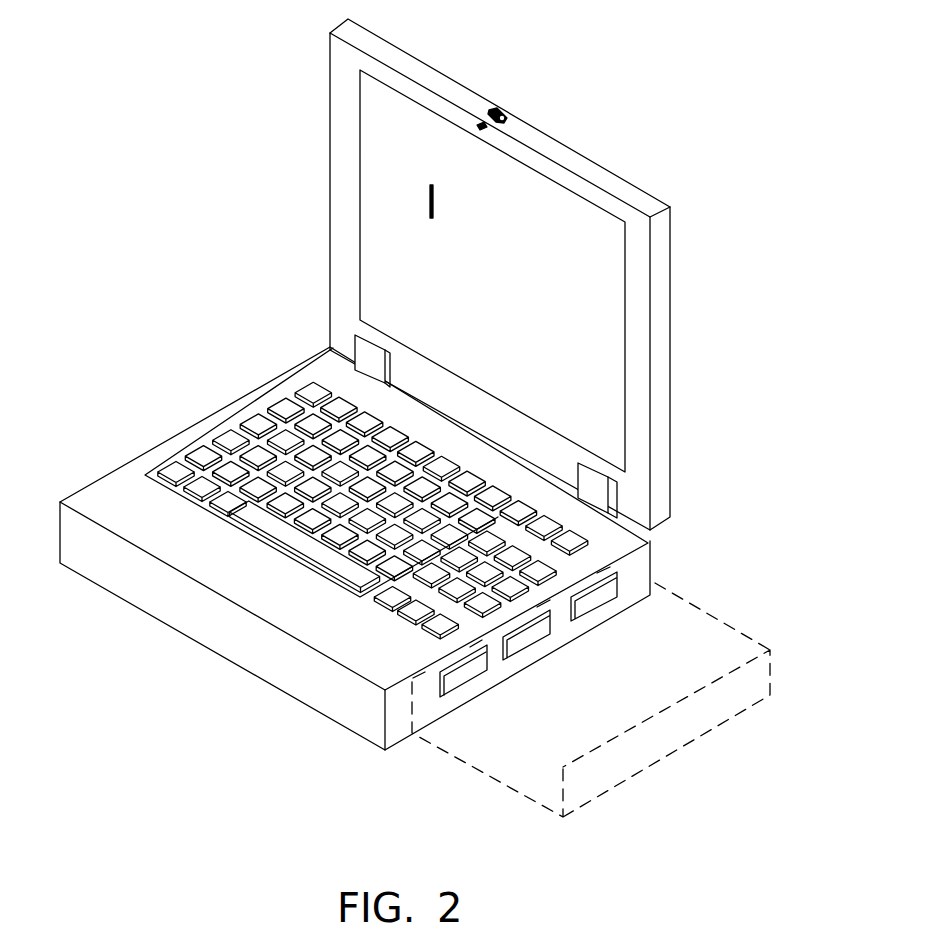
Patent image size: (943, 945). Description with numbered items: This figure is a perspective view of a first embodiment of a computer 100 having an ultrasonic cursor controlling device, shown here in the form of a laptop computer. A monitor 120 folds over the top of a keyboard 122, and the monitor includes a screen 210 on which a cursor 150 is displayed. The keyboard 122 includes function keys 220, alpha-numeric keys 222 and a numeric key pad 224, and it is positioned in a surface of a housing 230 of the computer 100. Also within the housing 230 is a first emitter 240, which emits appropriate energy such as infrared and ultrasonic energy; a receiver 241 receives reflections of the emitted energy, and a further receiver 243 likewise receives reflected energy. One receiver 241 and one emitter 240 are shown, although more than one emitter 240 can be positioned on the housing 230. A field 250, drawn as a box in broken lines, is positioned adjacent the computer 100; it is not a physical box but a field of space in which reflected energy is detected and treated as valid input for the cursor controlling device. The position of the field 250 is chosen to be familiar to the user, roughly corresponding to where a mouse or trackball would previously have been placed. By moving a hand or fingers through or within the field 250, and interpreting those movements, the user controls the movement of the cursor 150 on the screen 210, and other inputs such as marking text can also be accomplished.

The computer 100 is at (774, 243).
The monitor 120 is at (338, 183).
The keyboard 122 is at (231, 418).
The cursor 150 is at (433, 192).
The screen 210 is at (600, 340).
The function keys 220 is at (317, 395).
The alpha-numeric keys 222 is at (362, 510).
The numeric key pad 224 is at (460, 587).
The housing 230 is at (88, 563).
The first emitter 240 is at (440, 672).
The receiver 241 is at (532, 637).
The receiver 243 is at (477, 673).
The field 250 is at (700, 708).